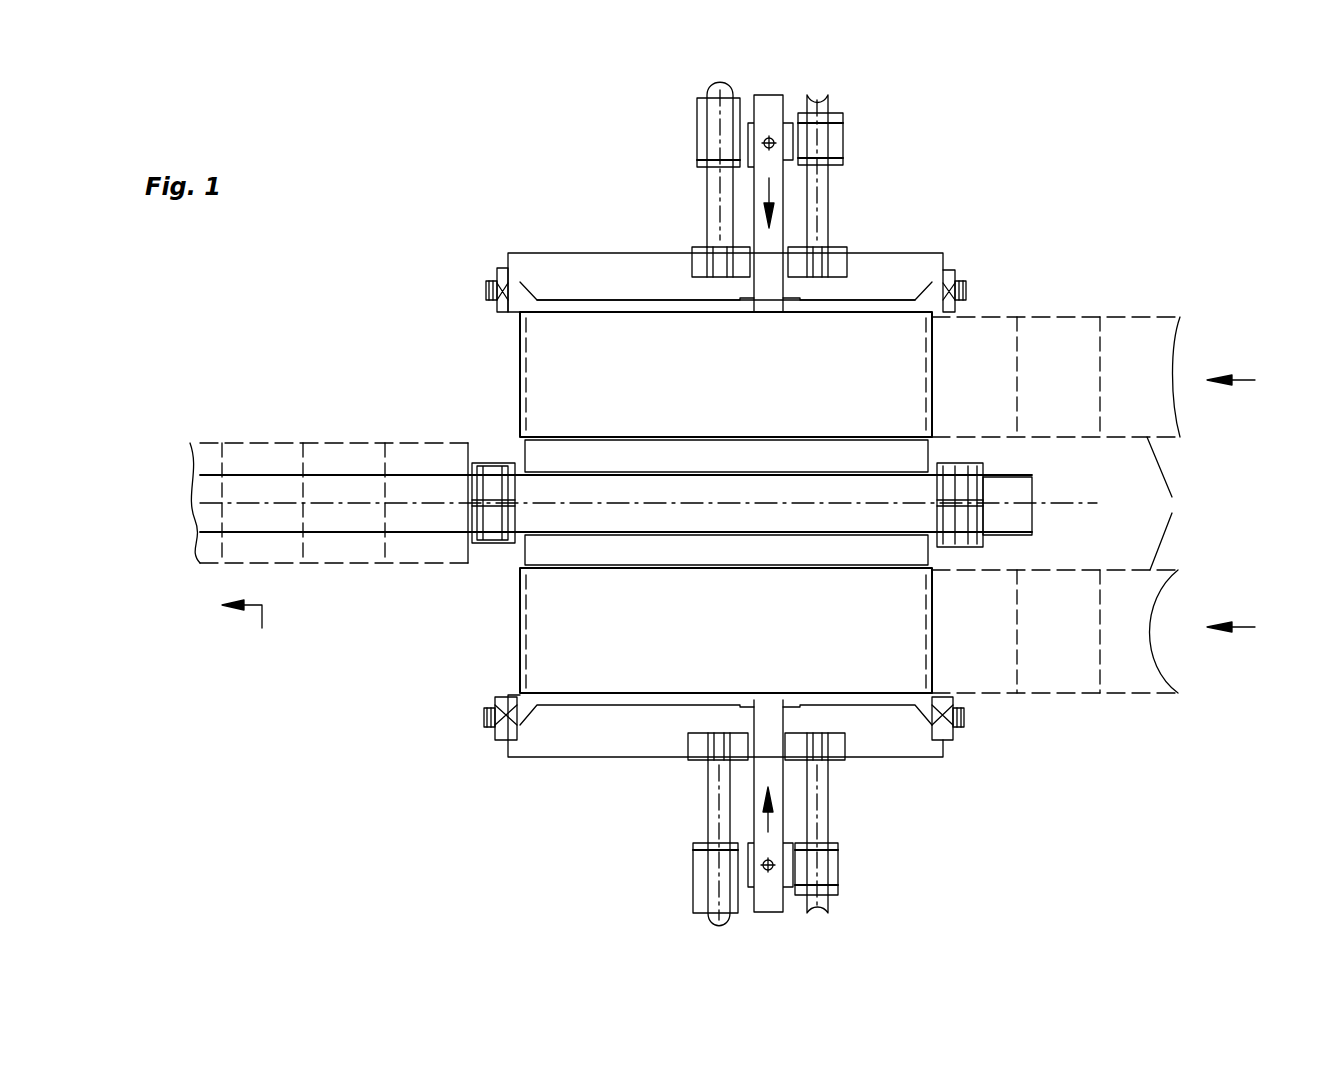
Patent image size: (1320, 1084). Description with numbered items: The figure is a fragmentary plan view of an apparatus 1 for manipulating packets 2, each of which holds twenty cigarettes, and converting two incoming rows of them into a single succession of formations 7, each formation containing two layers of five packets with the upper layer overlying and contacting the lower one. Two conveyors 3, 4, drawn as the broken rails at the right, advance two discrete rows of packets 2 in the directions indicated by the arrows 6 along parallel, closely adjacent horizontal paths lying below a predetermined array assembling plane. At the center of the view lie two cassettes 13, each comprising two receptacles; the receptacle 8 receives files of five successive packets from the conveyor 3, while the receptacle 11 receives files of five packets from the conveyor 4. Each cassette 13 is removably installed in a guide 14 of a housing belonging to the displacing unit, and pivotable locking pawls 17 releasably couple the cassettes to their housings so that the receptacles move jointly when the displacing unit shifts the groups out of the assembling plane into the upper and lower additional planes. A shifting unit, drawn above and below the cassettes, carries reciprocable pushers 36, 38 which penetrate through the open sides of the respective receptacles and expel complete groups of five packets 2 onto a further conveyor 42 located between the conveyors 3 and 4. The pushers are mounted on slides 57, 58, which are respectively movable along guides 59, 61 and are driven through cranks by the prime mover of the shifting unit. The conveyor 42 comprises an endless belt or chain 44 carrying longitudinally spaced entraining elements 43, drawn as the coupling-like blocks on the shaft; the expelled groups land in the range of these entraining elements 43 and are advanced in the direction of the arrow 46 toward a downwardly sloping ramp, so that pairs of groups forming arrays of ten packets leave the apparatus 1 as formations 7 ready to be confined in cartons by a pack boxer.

The apparatus 1 is at (550, 219).
The packets 2 is at (1171, 503).
The conveyor 3 is at (1163, 720).
The conveyor 4 is at (1163, 283).
The arrows 6 is at (1243, 504).
The formations 7 is at (213, 440).
The receptacle 8 is at (518, 622).
The receptacle 11 is at (518, 340).
The cassette 13 is at (888, 253).
The guide 14 is at (505, 285).
The locking pawls 17 is at (486, 290).
The pusher 36 is at (620, 705).
The pusher 38 is at (628, 298).
The further conveyor 42 is at (432, 575).
The entraining elements 43 is at (500, 463).
The endless belt or chain 44 is at (1030, 490).
The arrow 46 is at (251, 635).
The slide 57 is at (840, 868).
The slide 58 is at (843, 135).
The guide 59 is at (705, 792).
The guide 61 is at (830, 203).